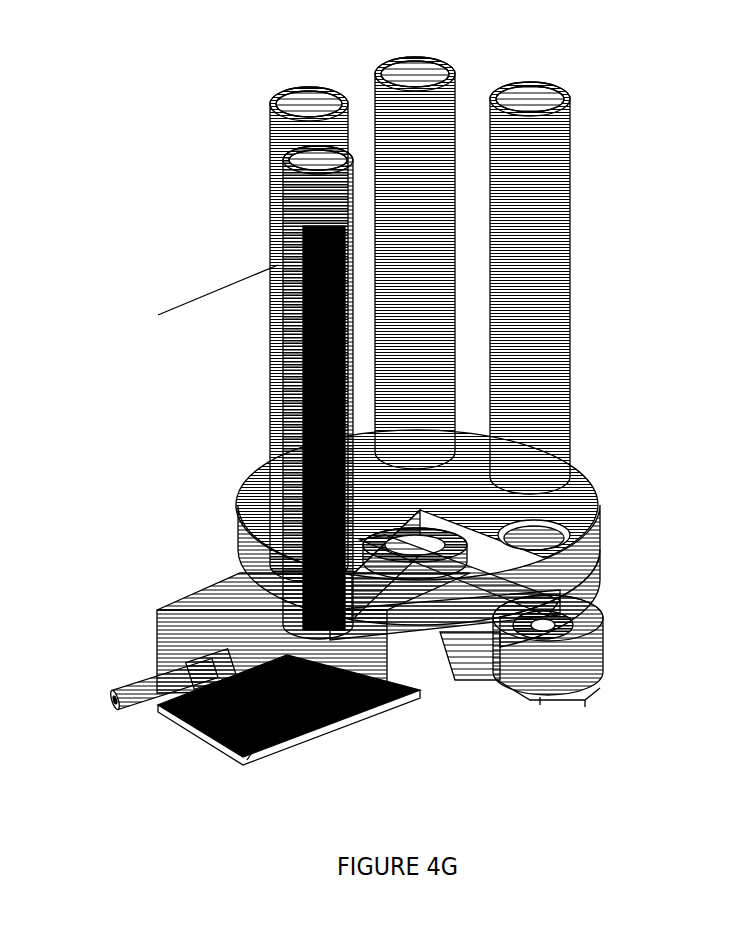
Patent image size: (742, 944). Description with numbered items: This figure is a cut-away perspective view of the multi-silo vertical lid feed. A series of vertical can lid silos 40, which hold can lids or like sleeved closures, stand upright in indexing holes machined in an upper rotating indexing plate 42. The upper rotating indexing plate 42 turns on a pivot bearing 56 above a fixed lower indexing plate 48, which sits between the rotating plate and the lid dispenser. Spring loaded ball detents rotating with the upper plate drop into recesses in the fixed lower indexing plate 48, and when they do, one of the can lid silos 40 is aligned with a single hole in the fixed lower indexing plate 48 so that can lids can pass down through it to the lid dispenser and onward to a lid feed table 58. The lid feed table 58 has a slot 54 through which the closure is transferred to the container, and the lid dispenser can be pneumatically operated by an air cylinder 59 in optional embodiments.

The vertical can lid silo 40 is at (568, 99).
The upper rotating indexing plate 42 is at (603, 504).
The fixed lower indexing plate 48 is at (601, 584).
The slot 54 is at (503, 678).
The pivot bearing 56 is at (604, 656).
The lid feed table 58 is at (573, 702).
The air cylinder 59 is at (112, 708).